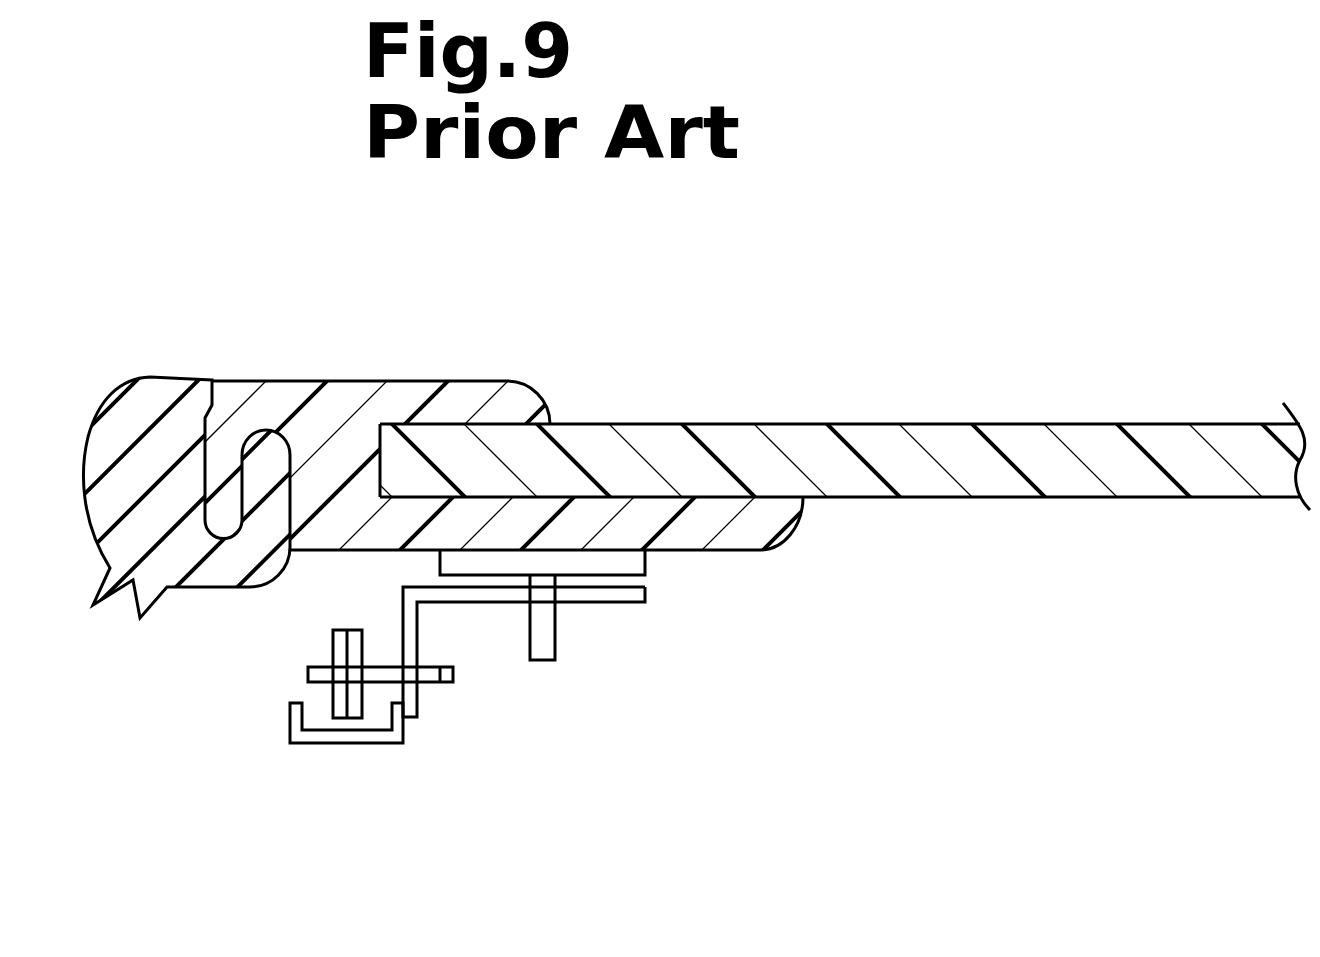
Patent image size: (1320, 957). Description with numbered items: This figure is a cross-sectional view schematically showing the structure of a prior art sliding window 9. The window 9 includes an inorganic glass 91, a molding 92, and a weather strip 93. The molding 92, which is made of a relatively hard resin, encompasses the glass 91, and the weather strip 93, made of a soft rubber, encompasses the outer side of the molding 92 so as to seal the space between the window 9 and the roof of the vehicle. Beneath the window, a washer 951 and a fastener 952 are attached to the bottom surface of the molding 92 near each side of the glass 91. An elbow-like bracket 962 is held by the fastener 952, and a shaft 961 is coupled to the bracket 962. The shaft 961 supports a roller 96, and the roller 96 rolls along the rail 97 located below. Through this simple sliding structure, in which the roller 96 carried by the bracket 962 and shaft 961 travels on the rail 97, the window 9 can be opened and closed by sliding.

The window 9 is at (850, 305).
The inorganic glass 91 is at (1018, 428).
The molding 92 is at (465, 388).
The weather strip 93 is at (166, 398).
The washer 951 is at (640, 560).
The fastener 952 is at (547, 645).
The roller 96 is at (337, 648).
The shaft 961 is at (427, 677).
The elbow-like bracket 962 is at (483, 597).
The rail 97 is at (307, 737).